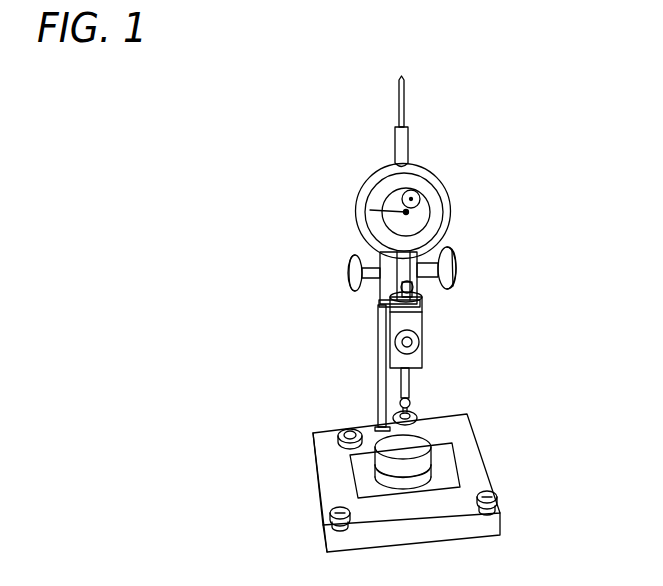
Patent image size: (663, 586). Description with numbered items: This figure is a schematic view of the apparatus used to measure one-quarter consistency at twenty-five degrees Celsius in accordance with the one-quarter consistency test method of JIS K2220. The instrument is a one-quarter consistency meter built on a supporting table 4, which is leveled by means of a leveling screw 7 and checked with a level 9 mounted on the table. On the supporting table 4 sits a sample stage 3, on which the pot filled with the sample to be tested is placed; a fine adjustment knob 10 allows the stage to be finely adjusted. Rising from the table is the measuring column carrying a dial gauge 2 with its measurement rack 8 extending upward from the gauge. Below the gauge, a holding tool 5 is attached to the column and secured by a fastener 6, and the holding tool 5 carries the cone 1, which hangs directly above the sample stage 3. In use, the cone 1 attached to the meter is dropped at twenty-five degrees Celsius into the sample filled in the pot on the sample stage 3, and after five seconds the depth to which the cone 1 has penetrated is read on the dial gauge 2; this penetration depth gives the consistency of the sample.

The cone 1 is at (435, 403).
The dial gauge 2 is at (463, 184).
The sample stage 3 is at (412, 447).
The supporting table 4 is at (373, 413).
The holding tool 5 is at (421, 376).
The fastener 6 is at (430, 333).
The leveling screw 7 is at (487, 497).
The measurement rack 8 is at (417, 108).
The level 9 is at (337, 416).
The fine adjustment knob 10 is at (418, 473).